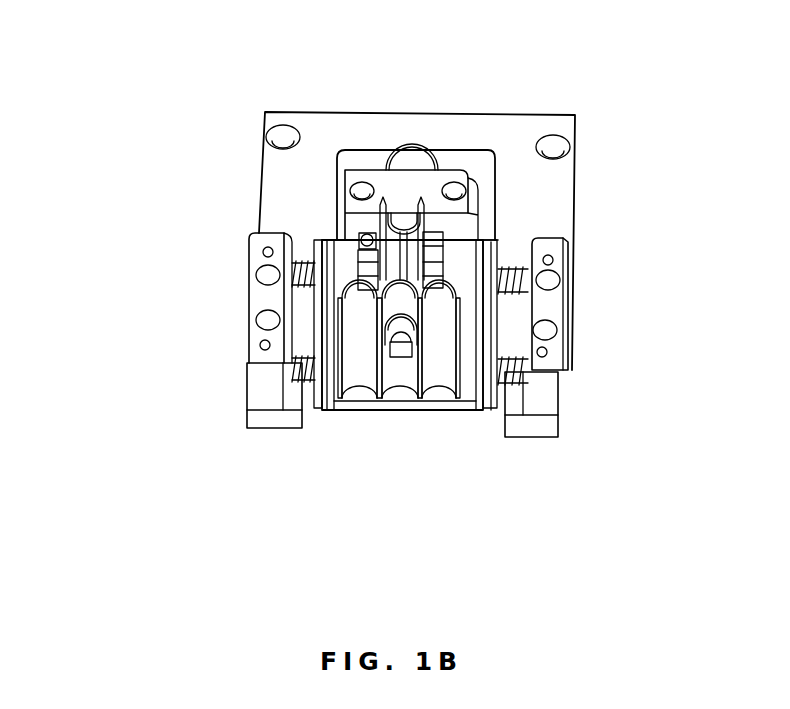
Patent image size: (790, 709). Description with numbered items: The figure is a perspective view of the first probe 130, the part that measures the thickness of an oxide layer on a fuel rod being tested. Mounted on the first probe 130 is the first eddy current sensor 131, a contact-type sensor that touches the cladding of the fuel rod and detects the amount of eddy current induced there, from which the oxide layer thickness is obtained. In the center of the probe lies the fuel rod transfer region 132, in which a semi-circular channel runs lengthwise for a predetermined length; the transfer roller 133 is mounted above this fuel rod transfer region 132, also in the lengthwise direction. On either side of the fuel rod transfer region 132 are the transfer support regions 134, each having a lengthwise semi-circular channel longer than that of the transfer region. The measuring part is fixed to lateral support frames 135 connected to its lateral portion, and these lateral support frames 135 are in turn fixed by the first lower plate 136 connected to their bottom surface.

The first probe 130 is at (385, 285).
The first eddy current sensor 131 is at (400, 343).
The fuel rod transfer region 132 is at (403, 375).
The transfer roller 133 is at (403, 247).
The transfer support regions 134 is at (435, 377).
The lateral support frames 135 is at (257, 385).
The first lower plate 136 is at (275, 185).